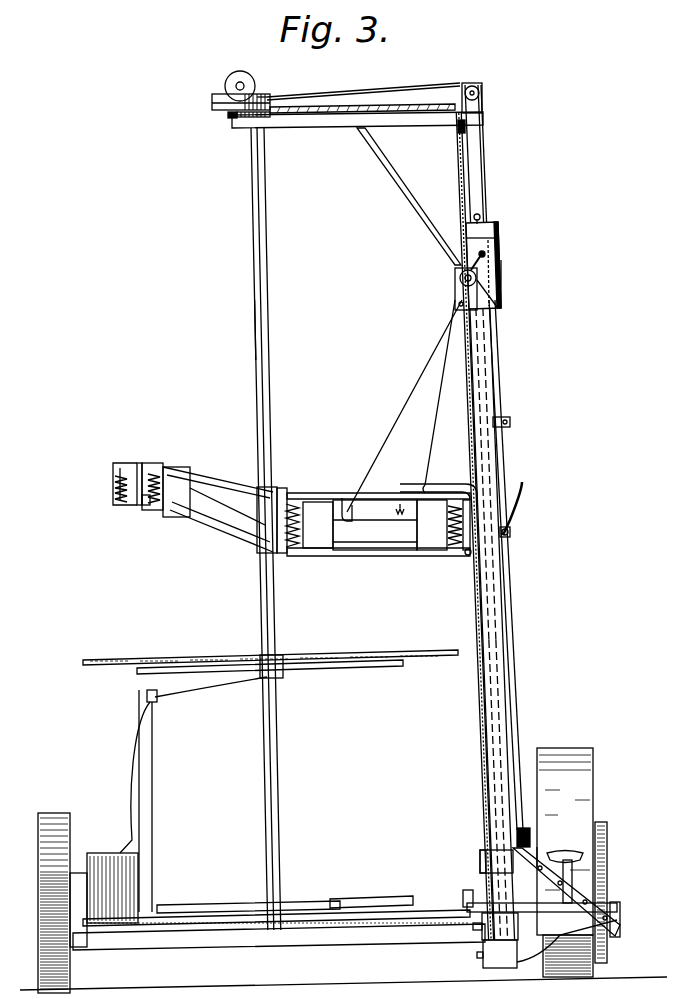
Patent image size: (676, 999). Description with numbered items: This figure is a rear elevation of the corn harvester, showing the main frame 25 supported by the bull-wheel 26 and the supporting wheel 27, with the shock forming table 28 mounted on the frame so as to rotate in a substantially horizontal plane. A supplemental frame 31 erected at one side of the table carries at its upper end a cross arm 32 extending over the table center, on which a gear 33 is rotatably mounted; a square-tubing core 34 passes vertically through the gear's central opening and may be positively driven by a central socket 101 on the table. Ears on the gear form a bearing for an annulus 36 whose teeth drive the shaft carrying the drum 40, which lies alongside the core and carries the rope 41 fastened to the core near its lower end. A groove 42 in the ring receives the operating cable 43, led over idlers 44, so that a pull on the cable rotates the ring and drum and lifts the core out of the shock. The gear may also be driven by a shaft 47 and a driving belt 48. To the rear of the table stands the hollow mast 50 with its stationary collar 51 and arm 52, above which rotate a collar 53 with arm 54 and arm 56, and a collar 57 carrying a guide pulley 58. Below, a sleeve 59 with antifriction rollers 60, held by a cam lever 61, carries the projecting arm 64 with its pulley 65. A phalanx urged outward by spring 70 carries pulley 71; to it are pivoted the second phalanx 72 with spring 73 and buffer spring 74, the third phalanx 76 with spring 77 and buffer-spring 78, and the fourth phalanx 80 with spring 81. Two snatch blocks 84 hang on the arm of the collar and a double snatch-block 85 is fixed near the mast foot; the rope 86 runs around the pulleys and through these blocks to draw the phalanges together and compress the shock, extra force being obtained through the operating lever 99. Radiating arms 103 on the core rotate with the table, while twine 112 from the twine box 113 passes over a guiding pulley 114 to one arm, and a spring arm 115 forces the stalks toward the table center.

The main frame 25 is at (389, 944).
The bull-wheel 26 is at (570, 765).
The supporting wheel 27 is at (55, 835).
The shock forming table 28 is at (345, 912).
The supplemental frame 31 is at (483, 172).
The cross arm 32 is at (327, 127).
The gear 33 is at (228, 116).
The core 34 is at (268, 333).
The annulus 36 is at (215, 95).
The drum 40 is at (240, 72).
The rope 41 is at (253, 236).
The groove 42 is at (212, 103).
The operating cable 43 is at (420, 88).
The idlers 44 is at (477, 89).
The shaft 47 is at (352, 104).
The driving belt 48 is at (455, 168).
The hollow mast 50 is at (495, 640).
The stationary collar 51 is at (501, 291).
The arm 52 is at (455, 296).
The collar 53 is at (500, 265).
The arm 54 is at (462, 267).
The arm 56 is at (458, 279).
The collar 57 is at (500, 236).
The guide pulley 58 is at (480, 217).
The sleeve 59 is at (505, 458).
The antifriction rollers 60 is at (510, 420).
The cam lever 61 is at (524, 505).
The projecting arm 64 is at (423, 556).
The pulley 65 is at (375, 525).
The spring 70 is at (452, 492).
The pulley 71 is at (347, 522).
The second phalanx 72 is at (228, 480).
The spring 73 is at (310, 550).
The buffer spring 74 is at (306, 508).
The third phalanx 76 is at (152, 463).
The spring 77 is at (155, 505).
The buffer-spring 78 is at (145, 500).
The fourth phalanx 80 is at (113, 470).
The spring 81 is at (115, 492).
The snatch blocks 84 is at (492, 303).
The double snatch-block 85 is at (531, 833).
The rope 86 is at (442, 402).
The operating lever 99 is at (540, 860).
The central socket 101 is at (283, 905).
The radiating arms 103 is at (359, 652).
The twine 112 is at (205, 689).
The twine box 113 is at (112, 860).
The guiding pulley 114 is at (155, 703).
The spring arm 115 is at (408, 898).